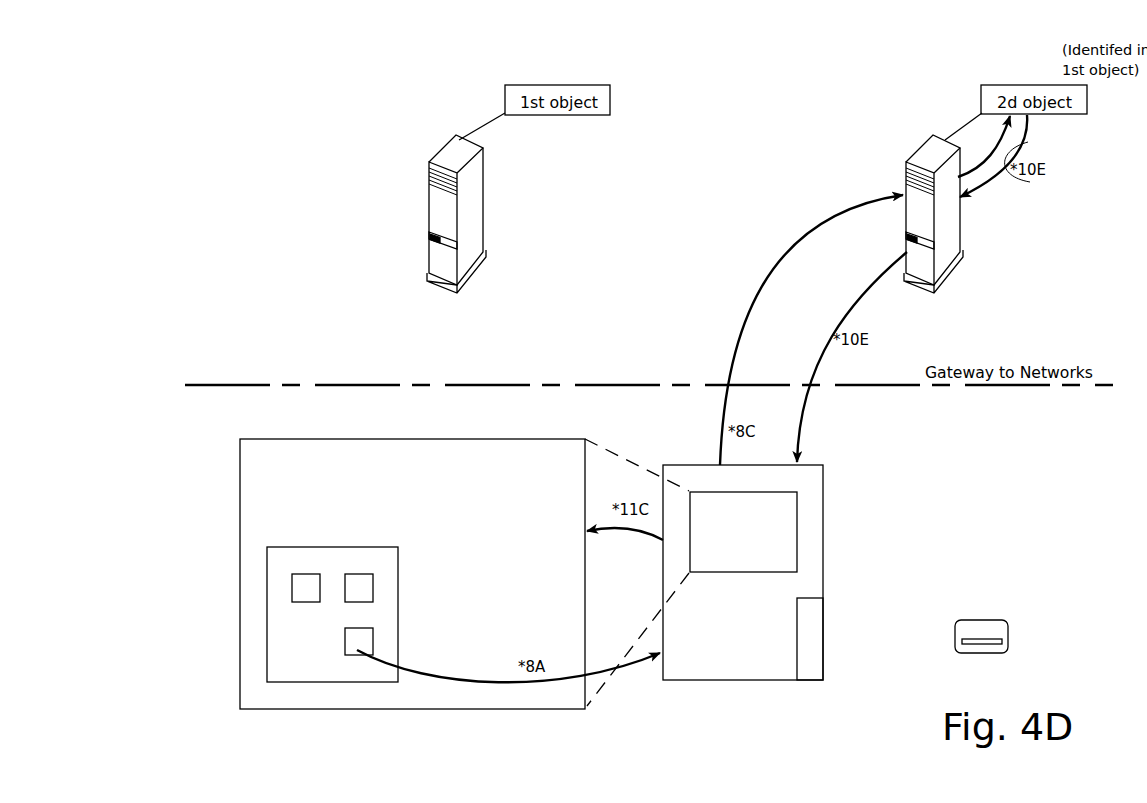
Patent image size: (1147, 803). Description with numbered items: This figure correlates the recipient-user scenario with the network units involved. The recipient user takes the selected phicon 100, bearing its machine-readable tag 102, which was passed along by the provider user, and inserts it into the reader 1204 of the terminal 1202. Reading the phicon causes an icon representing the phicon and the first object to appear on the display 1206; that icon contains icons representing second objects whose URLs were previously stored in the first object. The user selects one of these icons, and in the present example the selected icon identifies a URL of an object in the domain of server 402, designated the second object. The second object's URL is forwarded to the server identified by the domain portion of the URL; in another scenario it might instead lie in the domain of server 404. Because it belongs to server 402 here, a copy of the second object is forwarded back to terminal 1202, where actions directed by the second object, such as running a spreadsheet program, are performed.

The network server 404 is at (428, 178).
The network server 402 is at (965, 215).
The terminal 1202 is at (685, 688).
The reader 1204 is at (788, 623).
The display 1206 is at (760, 582).
The phicon 100 is at (1000, 620).
The machine-readable tag 102 is at (1002, 641).